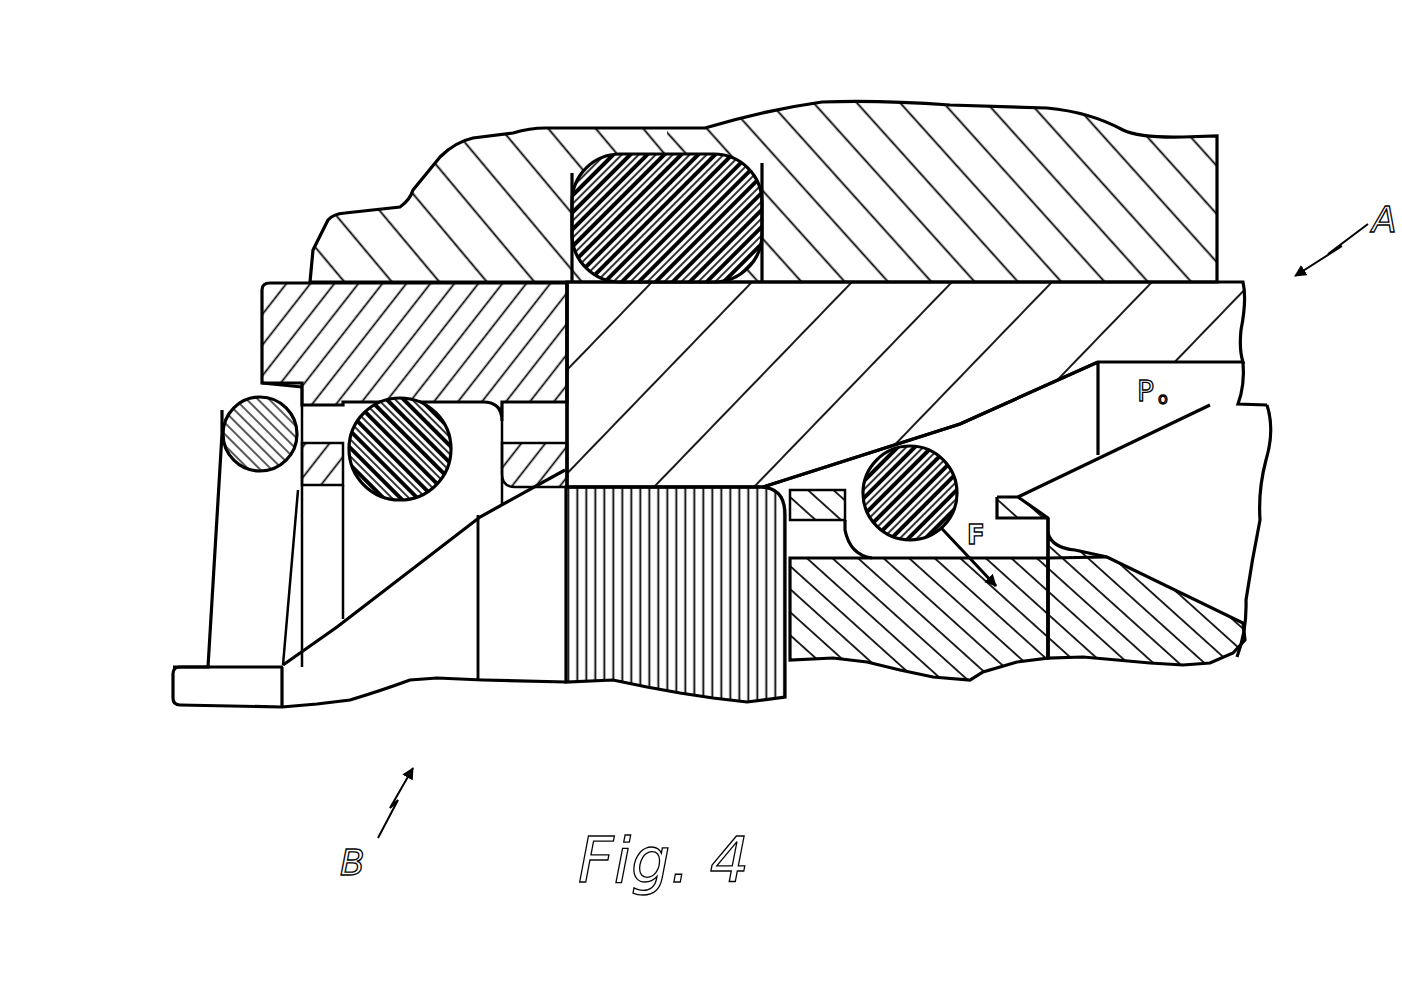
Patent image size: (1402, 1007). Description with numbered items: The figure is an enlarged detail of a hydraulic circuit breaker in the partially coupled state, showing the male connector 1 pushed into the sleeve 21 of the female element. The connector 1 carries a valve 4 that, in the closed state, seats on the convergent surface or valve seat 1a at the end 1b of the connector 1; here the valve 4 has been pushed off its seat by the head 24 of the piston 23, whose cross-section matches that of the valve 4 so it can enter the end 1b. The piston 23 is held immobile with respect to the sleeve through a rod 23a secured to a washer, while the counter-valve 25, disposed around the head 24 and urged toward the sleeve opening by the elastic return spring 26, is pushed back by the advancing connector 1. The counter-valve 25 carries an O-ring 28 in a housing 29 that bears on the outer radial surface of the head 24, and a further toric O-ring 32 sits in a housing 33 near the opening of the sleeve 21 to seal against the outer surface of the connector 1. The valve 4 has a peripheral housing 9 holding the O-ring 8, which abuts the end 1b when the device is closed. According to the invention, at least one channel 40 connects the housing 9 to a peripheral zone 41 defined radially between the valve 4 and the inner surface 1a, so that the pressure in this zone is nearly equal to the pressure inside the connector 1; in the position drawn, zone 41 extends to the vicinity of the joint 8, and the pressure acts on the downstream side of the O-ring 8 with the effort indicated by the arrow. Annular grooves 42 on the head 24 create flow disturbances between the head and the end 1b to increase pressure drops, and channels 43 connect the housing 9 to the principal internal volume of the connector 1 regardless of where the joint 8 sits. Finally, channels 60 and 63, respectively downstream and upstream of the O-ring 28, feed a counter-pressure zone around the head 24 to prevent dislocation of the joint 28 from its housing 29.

The connector 1 is at (1236, 321).
The convergent surface or valve seat 1a is at (1046, 392).
The end of the connector 1b is at (800, 303).
The valve 4 is at (1180, 633).
The O-ring 8 is at (918, 542).
The peripheral housing 9 is at (903, 560).
The sleeve 21 is at (1053, 137).
The piston 23 is at (458, 704).
The rod 23a is at (207, 690).
The head of the piston 24 is at (597, 630).
The counter-valve 25 is at (302, 305).
The elastic return spring 26 is at (242, 385).
The O-ring 28 is at (383, 478).
The housing 29 is at (478, 445).
The toric O-ring 32 is at (638, 207).
The housing 33 is at (702, 143).
The channel 40 is at (852, 478).
The peripheral zone 41 is at (826, 536).
The annular grooves 42 is at (645, 645).
The channels 43 is at (1048, 658).
The channel 60 is at (528, 415).
The channel 63 is at (325, 424).